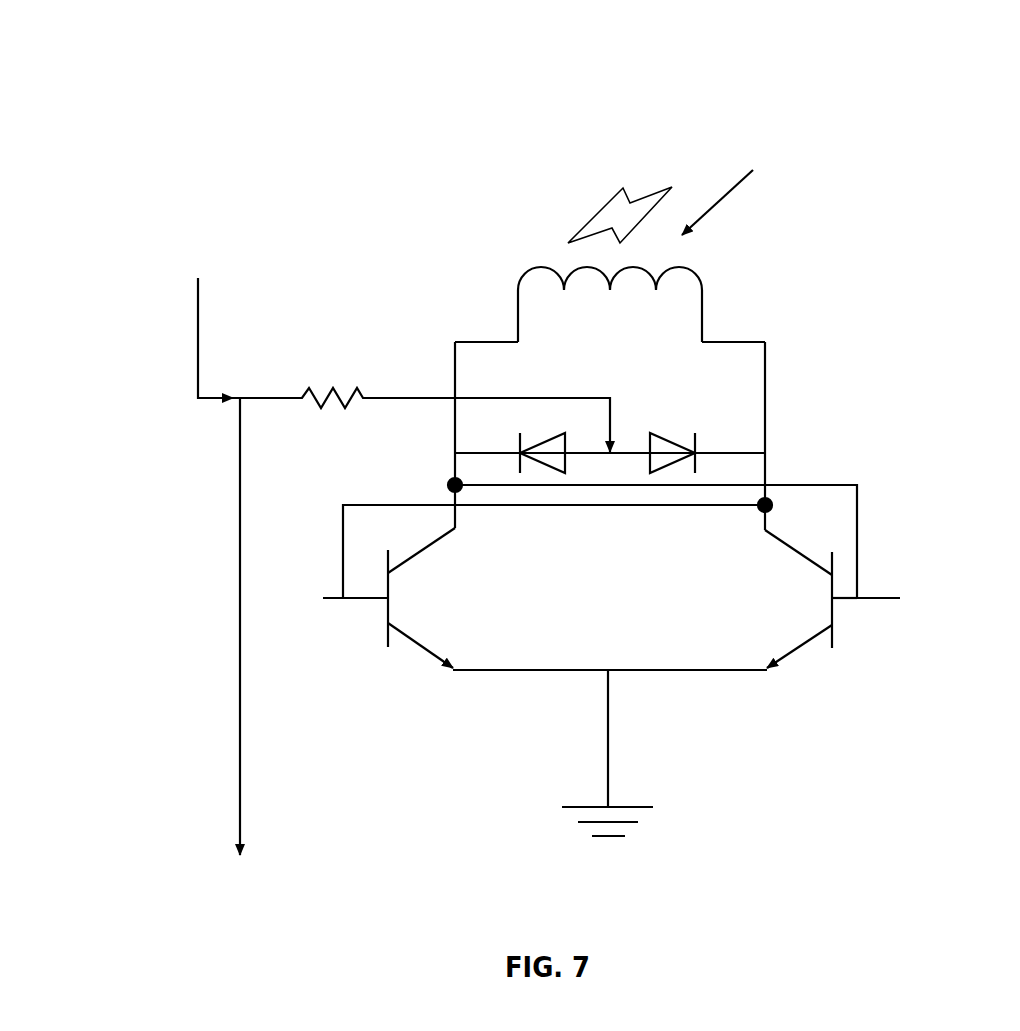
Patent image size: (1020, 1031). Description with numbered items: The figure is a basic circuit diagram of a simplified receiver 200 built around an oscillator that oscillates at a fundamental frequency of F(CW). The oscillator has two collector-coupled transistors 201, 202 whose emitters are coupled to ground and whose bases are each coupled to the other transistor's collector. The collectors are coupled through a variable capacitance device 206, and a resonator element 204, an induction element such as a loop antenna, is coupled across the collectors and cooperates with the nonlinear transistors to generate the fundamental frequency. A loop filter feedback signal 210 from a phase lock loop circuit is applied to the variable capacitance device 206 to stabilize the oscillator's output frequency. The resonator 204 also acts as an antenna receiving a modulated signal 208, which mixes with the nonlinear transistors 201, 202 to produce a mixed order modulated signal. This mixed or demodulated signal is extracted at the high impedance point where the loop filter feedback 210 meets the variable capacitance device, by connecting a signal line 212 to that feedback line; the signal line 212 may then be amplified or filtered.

The receiver 200 is at (155, 53).
The transistor 201 is at (388, 635).
The transistor 202 is at (832, 642).
The resonator element 204 is at (518, 268).
The variable capacitance device 206 is at (630, 453).
The modulated signal 208 is at (727, 192).
The loop filter feedback signal 210 is at (198, 317).
The signal line 212 is at (240, 670).